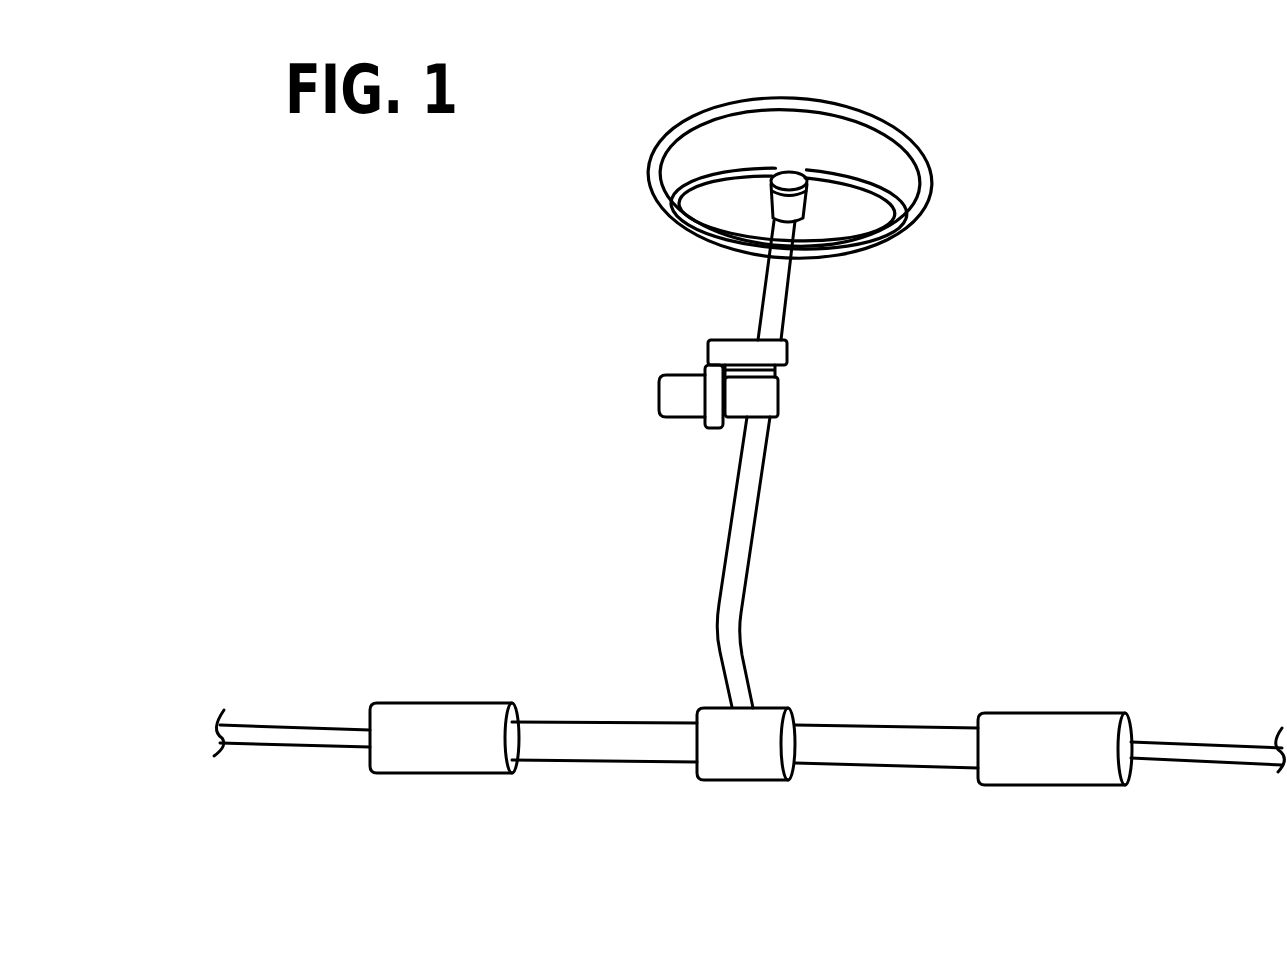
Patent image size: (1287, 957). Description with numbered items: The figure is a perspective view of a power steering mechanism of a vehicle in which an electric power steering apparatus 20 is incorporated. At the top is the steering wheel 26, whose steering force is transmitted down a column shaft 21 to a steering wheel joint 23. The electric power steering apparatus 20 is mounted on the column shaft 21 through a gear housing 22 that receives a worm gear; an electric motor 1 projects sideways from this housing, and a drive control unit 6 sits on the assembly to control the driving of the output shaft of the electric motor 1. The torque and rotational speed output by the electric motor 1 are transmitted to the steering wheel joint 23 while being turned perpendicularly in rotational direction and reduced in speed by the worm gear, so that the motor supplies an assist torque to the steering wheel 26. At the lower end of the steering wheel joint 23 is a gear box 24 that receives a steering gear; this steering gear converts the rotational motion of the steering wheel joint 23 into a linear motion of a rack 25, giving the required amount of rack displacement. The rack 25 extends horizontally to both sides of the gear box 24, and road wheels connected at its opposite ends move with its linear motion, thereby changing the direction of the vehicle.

The electric motor 1 is at (673, 402).
The drive control unit 6 is at (728, 347).
The electric power steering apparatus 20 is at (711, 360).
The column shaft 21 is at (787, 300).
The gear housing 22 is at (760, 402).
The steering wheel joint 23 is at (755, 523).
The gear box 24 is at (740, 740).
The rack 25 is at (612, 740).
The steering wheel 26 is at (922, 157).